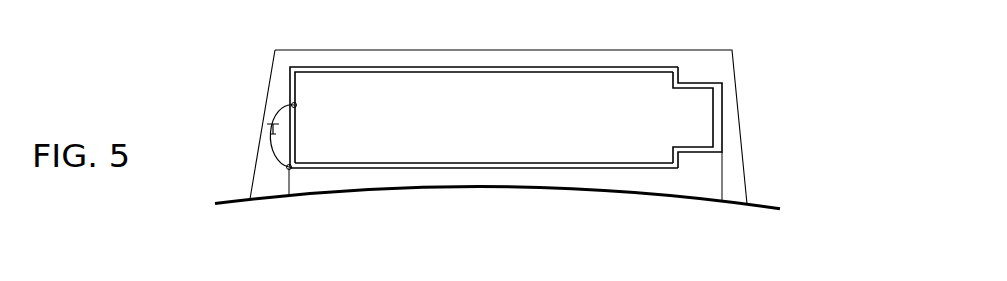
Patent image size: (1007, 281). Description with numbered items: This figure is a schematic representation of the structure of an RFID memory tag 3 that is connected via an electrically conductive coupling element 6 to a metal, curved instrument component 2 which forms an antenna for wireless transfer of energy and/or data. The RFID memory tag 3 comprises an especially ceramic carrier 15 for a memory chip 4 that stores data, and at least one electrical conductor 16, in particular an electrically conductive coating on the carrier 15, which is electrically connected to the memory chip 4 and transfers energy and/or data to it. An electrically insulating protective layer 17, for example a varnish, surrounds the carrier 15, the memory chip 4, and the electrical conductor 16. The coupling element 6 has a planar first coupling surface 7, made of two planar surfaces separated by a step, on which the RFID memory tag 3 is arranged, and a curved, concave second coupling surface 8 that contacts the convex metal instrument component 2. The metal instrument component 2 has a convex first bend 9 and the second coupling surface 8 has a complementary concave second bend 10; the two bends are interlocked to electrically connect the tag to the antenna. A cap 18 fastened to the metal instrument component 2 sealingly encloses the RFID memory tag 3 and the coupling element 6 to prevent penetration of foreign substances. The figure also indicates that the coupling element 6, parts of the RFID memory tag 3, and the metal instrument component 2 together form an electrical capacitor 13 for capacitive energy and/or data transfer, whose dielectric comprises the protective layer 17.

The metal instrument component 2 is at (518, 213).
The RFID memory tag 3 is at (758, 50).
The memory chip 4 is at (695, 107).
The electrically conductive coupling element 6 is at (712, 168).
The first coupling surface 7 is at (466, 165).
The second coupling surface 8 is at (563, 190).
The first bend 9 is at (306, 194).
The second bend 10 is at (660, 195).
The electrical capacitor 13 is at (263, 127).
The carrier 15 is at (483, 129).
The electrical conductor 16 is at (626, 70).
The electrically insulating protective layer 17 is at (333, 68).
The cap 18 is at (275, 83).